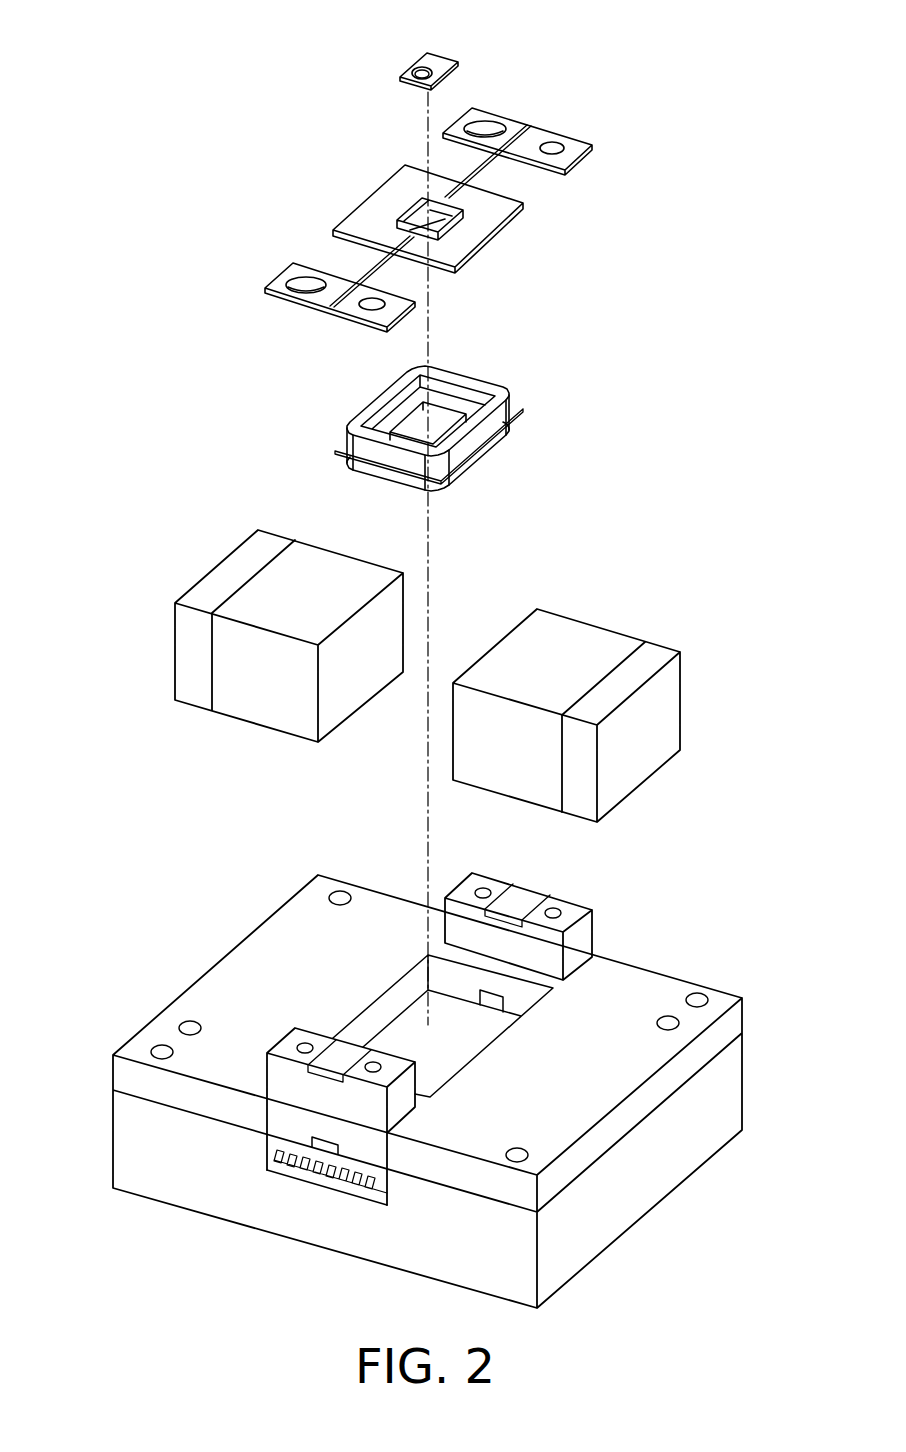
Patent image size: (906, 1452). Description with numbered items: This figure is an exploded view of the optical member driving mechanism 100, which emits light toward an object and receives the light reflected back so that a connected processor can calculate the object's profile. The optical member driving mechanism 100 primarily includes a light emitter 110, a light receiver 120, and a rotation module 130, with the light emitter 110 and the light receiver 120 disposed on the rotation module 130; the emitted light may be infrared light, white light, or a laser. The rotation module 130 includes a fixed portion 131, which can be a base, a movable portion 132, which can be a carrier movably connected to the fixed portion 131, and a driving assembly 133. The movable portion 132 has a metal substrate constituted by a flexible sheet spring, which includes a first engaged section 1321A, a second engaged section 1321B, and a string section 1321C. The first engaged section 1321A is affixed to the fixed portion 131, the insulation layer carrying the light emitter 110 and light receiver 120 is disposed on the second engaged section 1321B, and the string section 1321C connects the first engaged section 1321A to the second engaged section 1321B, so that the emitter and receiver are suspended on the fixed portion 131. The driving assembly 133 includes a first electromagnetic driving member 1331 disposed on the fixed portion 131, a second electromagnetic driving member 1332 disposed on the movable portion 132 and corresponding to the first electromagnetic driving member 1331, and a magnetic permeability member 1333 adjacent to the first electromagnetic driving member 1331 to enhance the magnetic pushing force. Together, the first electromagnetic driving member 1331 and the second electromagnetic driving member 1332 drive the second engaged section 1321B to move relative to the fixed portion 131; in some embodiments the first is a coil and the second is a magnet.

The optical member driving mechanism 100 is at (79, 31).
The light emitter 110 is at (437, 60).
The light receiver 120 is at (411, 70).
The rotation module 130 is at (802, 136).
The fixed portion 131 is at (655, 987).
The movable portion 132 is at (508, 254).
The first engaged section 1321A is at (483, 116).
The second engaged section 1321B is at (398, 192).
The string section 1321C is at (497, 168).
The driving assembly 133 is at (92, 361).
The first electromagnetic driving member 1331 is at (262, 703).
The second electromagnetic driving member 1332 is at (490, 400).
The magnetic permeability member 1333 is at (233, 573).